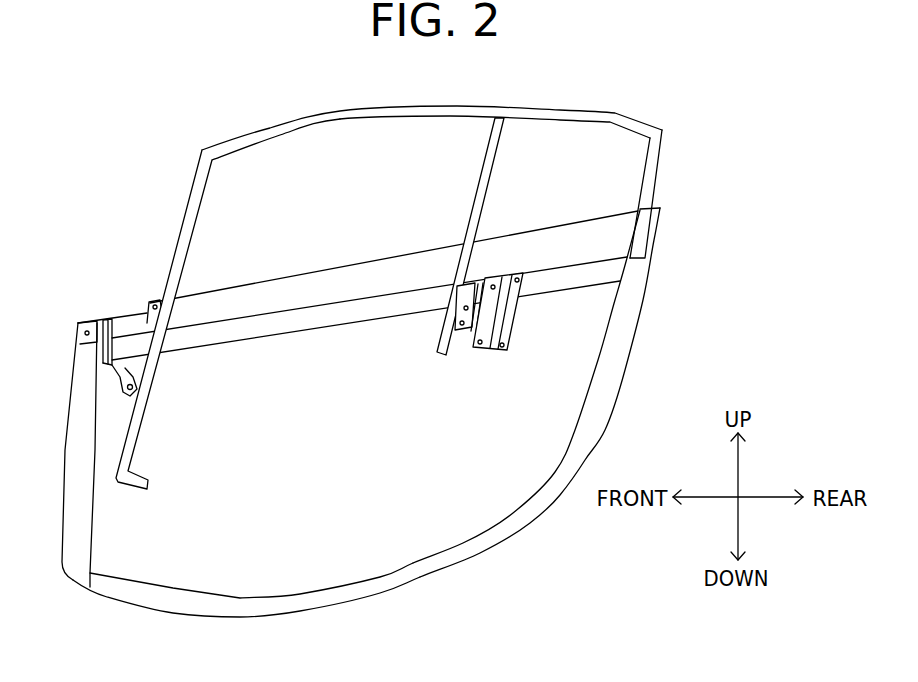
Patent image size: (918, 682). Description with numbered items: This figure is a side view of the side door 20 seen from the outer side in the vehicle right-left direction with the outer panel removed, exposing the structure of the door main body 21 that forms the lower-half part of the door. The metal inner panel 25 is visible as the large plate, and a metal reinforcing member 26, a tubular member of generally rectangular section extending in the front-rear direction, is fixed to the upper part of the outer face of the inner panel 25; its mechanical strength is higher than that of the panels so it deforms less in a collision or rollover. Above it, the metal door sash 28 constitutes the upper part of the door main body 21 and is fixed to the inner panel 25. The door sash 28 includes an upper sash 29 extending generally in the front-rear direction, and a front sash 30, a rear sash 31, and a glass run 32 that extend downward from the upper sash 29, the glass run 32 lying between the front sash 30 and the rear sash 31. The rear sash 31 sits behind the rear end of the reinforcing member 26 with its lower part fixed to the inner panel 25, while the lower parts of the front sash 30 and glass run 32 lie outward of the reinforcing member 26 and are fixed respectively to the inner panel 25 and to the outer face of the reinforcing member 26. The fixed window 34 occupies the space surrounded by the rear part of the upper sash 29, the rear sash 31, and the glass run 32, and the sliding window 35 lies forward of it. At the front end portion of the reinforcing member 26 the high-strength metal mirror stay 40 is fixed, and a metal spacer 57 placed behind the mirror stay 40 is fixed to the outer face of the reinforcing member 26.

The side door 20 is at (133, 160).
The door main body 21 is at (580, 448).
The inner panel 25 is at (390, 538).
The reinforcing member 26 is at (375, 310).
The door sash 28 is at (372, 107).
The upper sash 29 is at (475, 110).
The front sash 30 is at (195, 196).
The rear sash 31 is at (652, 189).
The glass run 32 is at (488, 178).
The fixed window 34 is at (637, 152).
The sliding window 35 is at (238, 163).
The mirror stay 40 is at (118, 348).
The spacer 57 is at (470, 334).